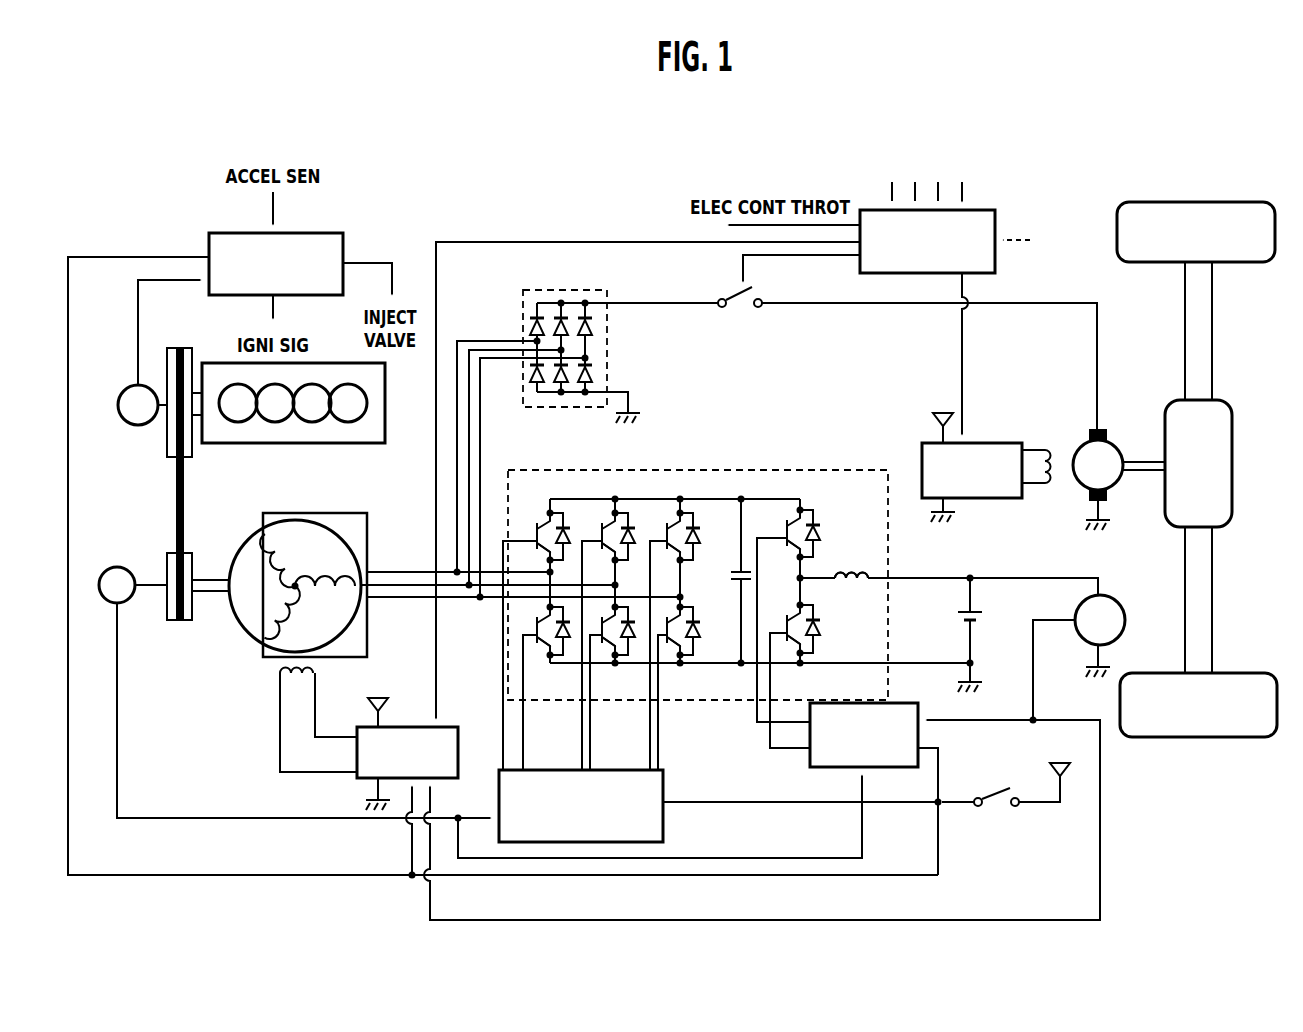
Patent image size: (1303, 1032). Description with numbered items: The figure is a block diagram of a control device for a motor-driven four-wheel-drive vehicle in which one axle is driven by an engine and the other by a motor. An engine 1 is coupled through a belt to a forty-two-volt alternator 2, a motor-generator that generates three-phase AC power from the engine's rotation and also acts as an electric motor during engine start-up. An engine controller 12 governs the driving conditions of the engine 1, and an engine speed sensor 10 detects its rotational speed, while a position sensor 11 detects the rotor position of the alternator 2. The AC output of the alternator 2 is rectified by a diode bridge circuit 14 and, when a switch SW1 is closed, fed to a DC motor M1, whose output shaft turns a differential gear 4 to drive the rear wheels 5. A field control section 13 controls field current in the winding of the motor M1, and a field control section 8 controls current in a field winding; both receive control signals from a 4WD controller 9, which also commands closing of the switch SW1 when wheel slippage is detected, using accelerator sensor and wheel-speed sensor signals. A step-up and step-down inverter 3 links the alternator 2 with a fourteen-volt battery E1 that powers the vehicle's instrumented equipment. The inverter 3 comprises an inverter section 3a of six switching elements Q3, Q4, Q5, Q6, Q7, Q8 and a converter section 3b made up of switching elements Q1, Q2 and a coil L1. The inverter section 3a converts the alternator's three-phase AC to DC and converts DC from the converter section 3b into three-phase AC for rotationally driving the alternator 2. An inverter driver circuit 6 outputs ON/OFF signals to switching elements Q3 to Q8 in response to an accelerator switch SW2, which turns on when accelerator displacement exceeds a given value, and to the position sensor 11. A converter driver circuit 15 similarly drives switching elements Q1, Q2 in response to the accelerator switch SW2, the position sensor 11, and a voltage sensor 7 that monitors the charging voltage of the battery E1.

The engine 1 is at (362, 443).
The 42V alternator (motor-generator) 2 is at (252, 530).
The step-up and step-down inverter 3 is at (740, 464).
The inverter section 3a is at (632, 460).
The converter section 3b is at (824, 460).
The differential gear 4 is at (1234, 470).
The rear wheels 5 is at (1222, 202).
The inverter driver circuit 6 is at (663, 786).
The voltage sensor 7 is at (1126, 620).
The field control section 8 is at (407, 727).
The 4WD controller 9 is at (875, 210).
The engine speed sensor 10 is at (121, 385).
The position sensor 11 is at (116, 566).
The engine controller 12 is at (343, 240).
The field control section 13 is at (1003, 443).
The diode bridge circuit 14 is at (607, 346).
The converter driver circuit 15 is at (808, 763).
The switching element Q1 is at (816, 510).
The switching element Q2 is at (816, 620).
The switching element Q3 is at (535, 525).
The switching element Q4 is at (600, 523).
The switching element Q5 is at (665, 523).
The switching element Q6 is at (540, 650).
The switching element Q7 is at (605, 650).
The switching element Q8 is at (670, 650).
The coil L1 is at (851, 563).
The 14V battery E1 is at (984, 635).
The DC motor M1 is at (1112, 440).
The switch SW1 is at (738, 312).
The accelerator switch SW2 is at (1006, 800).